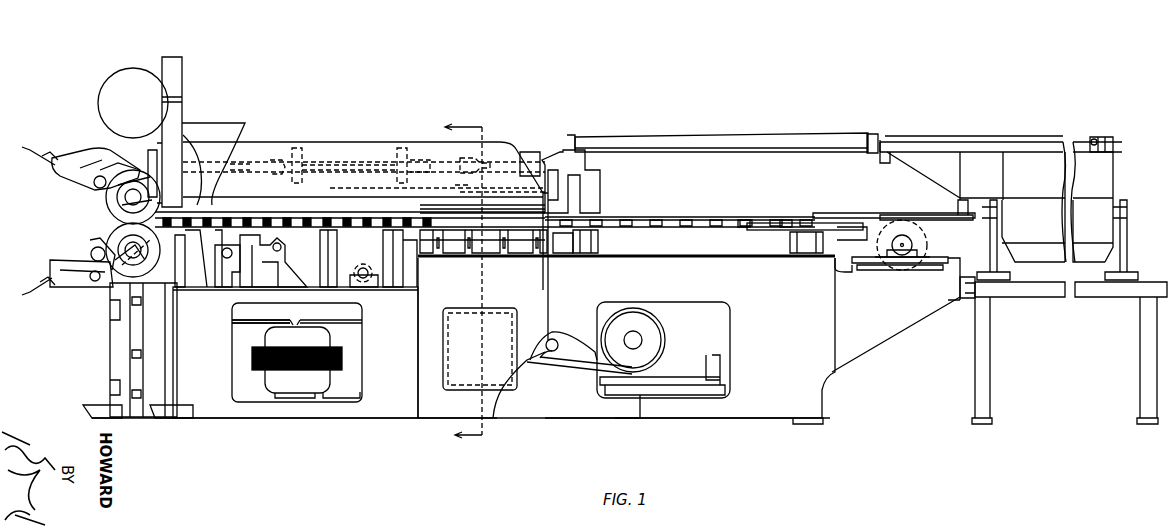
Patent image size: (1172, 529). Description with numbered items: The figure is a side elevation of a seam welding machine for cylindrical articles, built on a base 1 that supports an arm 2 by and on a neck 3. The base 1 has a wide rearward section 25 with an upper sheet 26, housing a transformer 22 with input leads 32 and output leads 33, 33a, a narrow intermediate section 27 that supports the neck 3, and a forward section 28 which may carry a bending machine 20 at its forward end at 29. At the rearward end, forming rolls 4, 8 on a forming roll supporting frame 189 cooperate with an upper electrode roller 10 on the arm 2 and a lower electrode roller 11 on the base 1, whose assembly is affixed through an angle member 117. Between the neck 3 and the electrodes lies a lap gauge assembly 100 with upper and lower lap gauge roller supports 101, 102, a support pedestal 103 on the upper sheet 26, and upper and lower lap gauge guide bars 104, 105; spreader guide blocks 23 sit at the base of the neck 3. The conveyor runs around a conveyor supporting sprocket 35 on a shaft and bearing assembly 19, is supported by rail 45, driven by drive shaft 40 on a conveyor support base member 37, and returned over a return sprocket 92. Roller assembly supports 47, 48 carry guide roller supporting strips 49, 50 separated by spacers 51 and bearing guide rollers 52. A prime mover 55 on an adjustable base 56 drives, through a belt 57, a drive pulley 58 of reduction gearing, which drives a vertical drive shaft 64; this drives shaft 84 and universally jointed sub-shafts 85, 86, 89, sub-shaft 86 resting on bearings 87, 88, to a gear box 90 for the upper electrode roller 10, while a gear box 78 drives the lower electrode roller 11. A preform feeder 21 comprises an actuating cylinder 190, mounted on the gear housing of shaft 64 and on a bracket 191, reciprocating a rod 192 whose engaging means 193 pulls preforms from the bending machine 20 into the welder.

The base 1 is at (391, 429).
The arm 2 is at (488, 141).
The neck 3 is at (489, 206).
The forming roll 4 is at (212, 131).
The forming roll 8 is at (125, 84).
The upper electrode roller 10 is at (115, 203).
The lower electrode roller 11 is at (115, 235).
The shaft and bearing assembly 19 is at (871, 281).
The bending machine 20 is at (1027, 132).
The preform feeder actuating cylinder 21 is at (776, 127).
The transformer 22 is at (276, 378).
The spreader guide block 23 is at (515, 214).
The rearward section 25 is at (416, 336).
The upper sheet 26 is at (350, 290).
The intermediate section 27 is at (473, 279).
The forward section 28 is at (705, 276).
The forward end attachment point 29 is at (968, 300).
The input leads 32 is at (352, 395).
The output lead 33 is at (258, 322).
The output lead 33a is at (428, 195).
The conveyor supporting sprocket 35 is at (925, 244).
The conveyor support base member 37 is at (290, 272).
The drive shaft 40 is at (225, 258).
The conveyor guiding and supporting rail 45 is at (846, 226).
The roller assembly support 47 is at (600, 238).
The roller assembly support 48 is at (818, 254).
The guide roller supporting strip 49 is at (707, 218).
The guide roller supporting strip 50 is at (718, 228).
The supporting strip spacer 51 is at (792, 218).
The guide roller 52 is at (742, 218).
The prime mover 55 is at (655, 336).
The adjustable base 56 is at (660, 393).
The belt 57 is at (585, 378).
The drive pulley 58 is at (560, 340).
The vertical drive shaft 64 is at (575, 198).
The gear box 78 is at (86, 282).
The shaft 84 is at (548, 152).
The universally jointed sub-shaft 85 is at (488, 163).
The universally jointed sub-shaft 86 is at (340, 161).
The bearing 87 is at (397, 147).
The bearing 88 is at (305, 148).
The universally jointed sub-shaft 89 is at (252, 168).
The gear box 90 is at (88, 165).
The return sprocket 92 is at (372, 280).
The lap gauge assembly 100 is at (298, 210).
The upper lap gauge roller support 101 is at (208, 224).
The lower lap gauge roller support 102 is at (252, 228).
The support pedestal 103 is at (190, 248).
The upper lap gauge guide bar 104 is at (318, 270).
The lower lap gauge guide bar 105 is at (380, 252).
The angle member 117 is at (160, 372).
The forming roll supporting frame 189 is at (196, 76).
The actuating cylinder 190 is at (703, 143).
The bracket 191 is at (942, 165).
The rod 192 is at (895, 142).
The engaging means 193 is at (1110, 140).